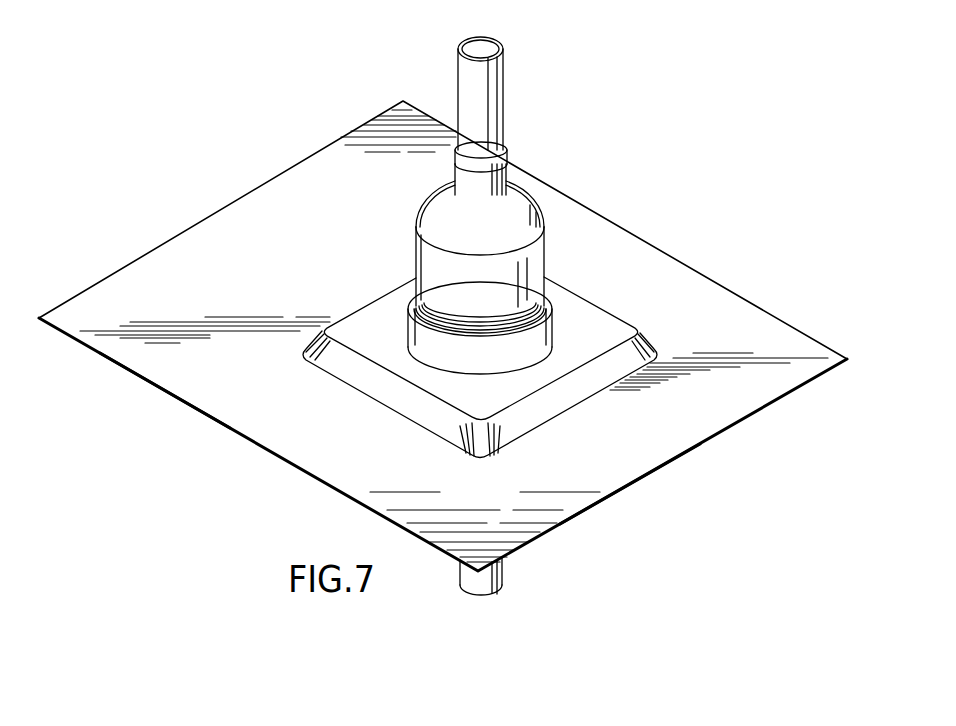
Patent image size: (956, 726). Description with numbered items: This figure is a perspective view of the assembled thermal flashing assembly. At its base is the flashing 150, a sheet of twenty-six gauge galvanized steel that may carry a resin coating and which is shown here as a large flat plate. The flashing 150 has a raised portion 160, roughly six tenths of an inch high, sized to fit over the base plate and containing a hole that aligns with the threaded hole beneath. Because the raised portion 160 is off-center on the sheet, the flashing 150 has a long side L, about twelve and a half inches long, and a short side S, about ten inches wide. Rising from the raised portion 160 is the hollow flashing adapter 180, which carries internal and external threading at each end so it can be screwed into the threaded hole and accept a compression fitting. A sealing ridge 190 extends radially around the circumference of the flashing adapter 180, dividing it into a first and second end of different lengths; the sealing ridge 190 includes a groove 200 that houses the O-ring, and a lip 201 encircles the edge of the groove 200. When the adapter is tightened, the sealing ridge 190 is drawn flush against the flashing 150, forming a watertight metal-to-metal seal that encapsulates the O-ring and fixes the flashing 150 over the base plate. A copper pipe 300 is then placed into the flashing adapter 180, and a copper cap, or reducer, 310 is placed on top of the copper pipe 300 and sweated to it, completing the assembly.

The flashing 150 is at (748, 300).
The raised portion 160 is at (442, 422).
The flashing adapter 180 is at (437, 327).
The sealing ridge 190 is at (430, 353).
The groove 200 is at (548, 292).
The lip 201 is at (550, 300).
The copper pipe 300 is at (485, 107).
The copper cap 310 is at (537, 207).
The long side L is at (168, 392).
The short side S is at (625, 487).